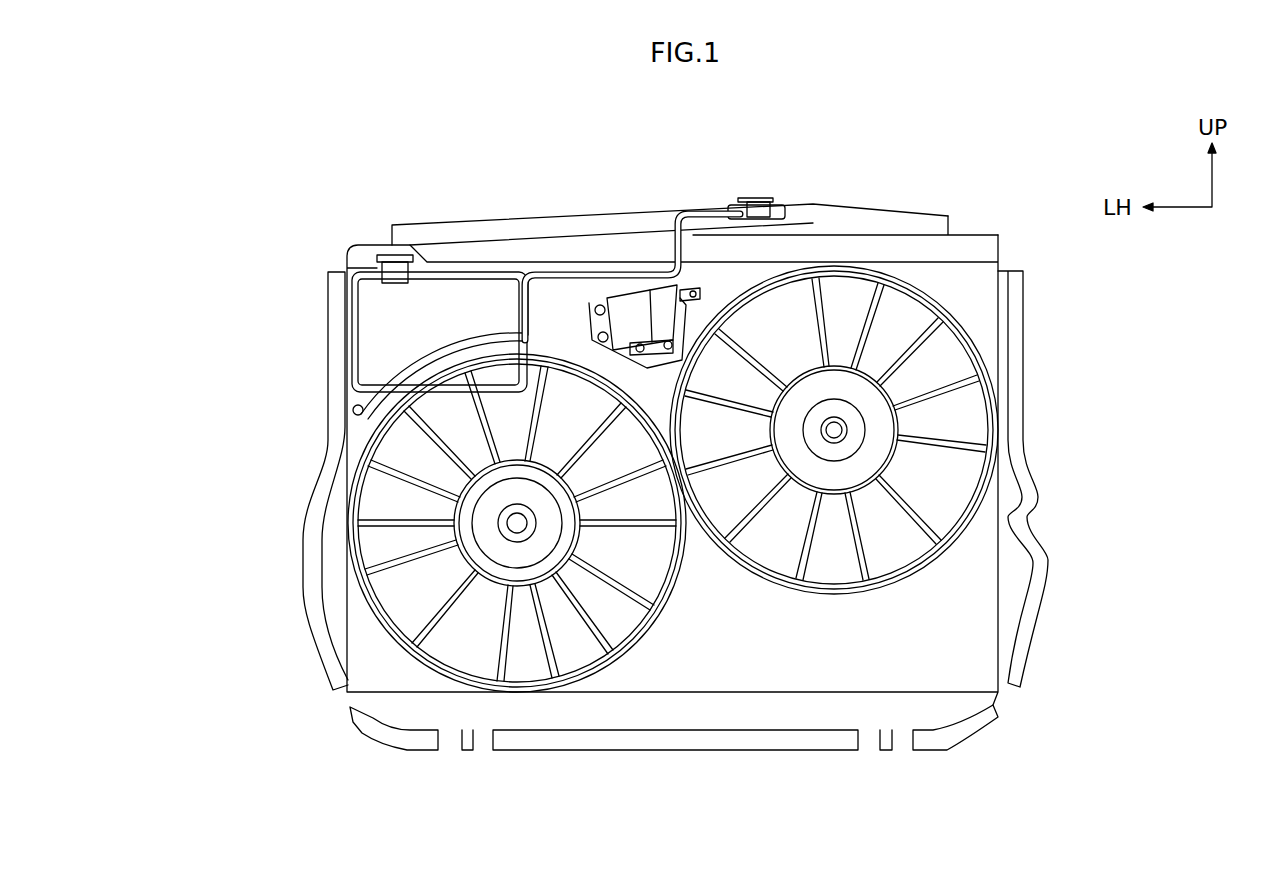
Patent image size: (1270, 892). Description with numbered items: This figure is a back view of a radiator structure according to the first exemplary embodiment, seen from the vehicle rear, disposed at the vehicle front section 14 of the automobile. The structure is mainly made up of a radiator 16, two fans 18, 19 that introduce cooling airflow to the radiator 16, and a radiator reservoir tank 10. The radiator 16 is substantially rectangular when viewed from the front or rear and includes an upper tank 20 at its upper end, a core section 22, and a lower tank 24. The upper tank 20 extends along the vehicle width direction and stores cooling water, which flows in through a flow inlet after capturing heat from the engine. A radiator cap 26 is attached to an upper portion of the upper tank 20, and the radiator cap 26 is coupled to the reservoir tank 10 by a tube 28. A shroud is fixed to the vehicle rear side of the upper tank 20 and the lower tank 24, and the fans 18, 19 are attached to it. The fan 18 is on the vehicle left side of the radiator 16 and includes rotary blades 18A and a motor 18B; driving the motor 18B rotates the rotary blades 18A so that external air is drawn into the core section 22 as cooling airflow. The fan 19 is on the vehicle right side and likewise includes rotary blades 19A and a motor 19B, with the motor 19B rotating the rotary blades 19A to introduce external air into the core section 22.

The radiator reservoir tank 10 is at (345, 352).
The vehicle front section 14 is at (323, 228).
The radiator 16 is at (962, 225).
The fan 18 is at (473, 579).
The rotary blades 18A is at (447, 638).
The motor 18B is at (487, 515).
The fan 19 is at (893, 535).
The rotary blades 19A is at (900, 540).
The motor 19B is at (860, 426).
The upper tank 20 is at (816, 222).
The core section 22 is at (977, 311).
The lower tank 24 is at (762, 730).
The radiator cap 26 is at (752, 198).
The tube 28 is at (575, 280).